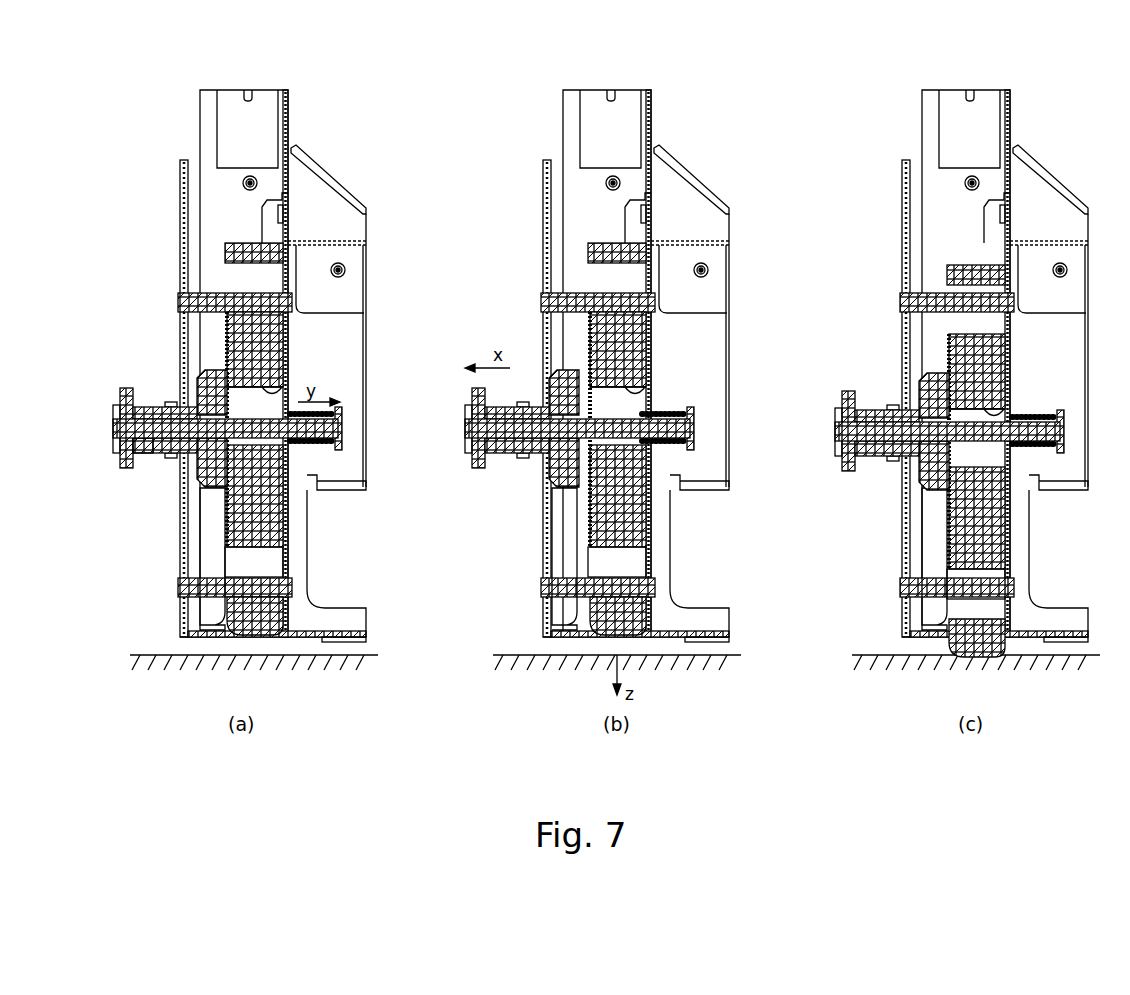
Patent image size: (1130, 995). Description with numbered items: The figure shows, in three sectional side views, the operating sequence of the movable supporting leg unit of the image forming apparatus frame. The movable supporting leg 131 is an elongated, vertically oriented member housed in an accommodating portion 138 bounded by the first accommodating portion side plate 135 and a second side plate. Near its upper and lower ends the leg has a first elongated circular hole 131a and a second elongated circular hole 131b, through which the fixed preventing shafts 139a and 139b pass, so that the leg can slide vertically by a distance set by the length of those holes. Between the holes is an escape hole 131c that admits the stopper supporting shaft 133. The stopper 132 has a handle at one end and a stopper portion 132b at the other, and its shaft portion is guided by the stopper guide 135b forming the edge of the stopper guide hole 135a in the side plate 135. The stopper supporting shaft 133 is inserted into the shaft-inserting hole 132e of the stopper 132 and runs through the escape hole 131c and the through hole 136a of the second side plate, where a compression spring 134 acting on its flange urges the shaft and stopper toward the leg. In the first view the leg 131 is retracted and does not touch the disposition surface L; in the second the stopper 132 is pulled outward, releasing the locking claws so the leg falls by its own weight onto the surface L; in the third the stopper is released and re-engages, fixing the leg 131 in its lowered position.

The movable supporting leg 131 is at (272, 510).
The first elongated circular hole 131a is at (248, 256).
The second elongated circular hole 131b is at (238, 550).
The escape hole 131c is at (288, 392).
The stopper 132 is at (114, 476).
The stopper portion 132b is at (210, 490).
The shaft-inserting hole 132e is at (150, 452).
The stopper supporting shaft 133 is at (120, 403).
The compression spring 134 is at (322, 447).
The first accommodating portion side plate 135 is at (116, 446).
The stopper guide hole 135a is at (172, 455).
The stopper guide 135b is at (172, 402).
The through hole 136a is at (300, 432).
The accommodating portion 138 is at (210, 616).
The first preventing shaft 139a is at (186, 322).
The second preventing shaft 139b is at (212, 593).
The disposition surface L is at (365, 655).